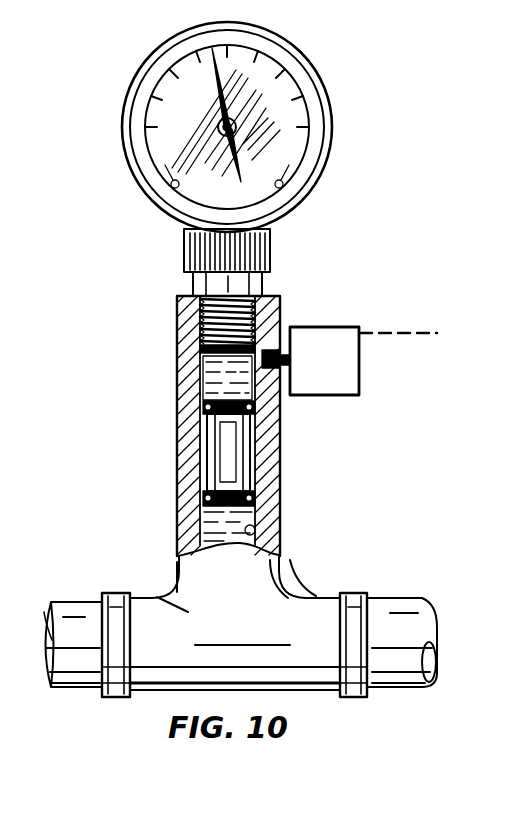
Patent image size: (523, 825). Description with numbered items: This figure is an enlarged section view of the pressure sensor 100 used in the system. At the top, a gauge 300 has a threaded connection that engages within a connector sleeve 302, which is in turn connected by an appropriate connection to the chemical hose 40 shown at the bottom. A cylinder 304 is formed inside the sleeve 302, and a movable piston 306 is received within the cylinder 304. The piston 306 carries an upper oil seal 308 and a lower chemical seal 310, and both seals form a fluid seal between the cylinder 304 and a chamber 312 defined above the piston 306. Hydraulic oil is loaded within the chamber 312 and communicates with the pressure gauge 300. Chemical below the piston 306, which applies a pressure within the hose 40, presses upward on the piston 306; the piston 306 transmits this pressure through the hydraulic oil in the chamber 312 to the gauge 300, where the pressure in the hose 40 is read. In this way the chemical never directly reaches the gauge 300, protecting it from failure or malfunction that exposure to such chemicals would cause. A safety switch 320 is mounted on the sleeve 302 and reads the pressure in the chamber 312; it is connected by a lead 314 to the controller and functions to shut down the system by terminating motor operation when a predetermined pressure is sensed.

The pressure sensor 100 is at (293, 44).
The gauge 300 is at (312, 96).
The connector sleeve 302 is at (190, 325).
The cylinder 304 is at (256, 530).
The movable piston 306 is at (240, 469).
The upper oil seal 308 is at (197, 421).
The lower chemical seal 310 is at (197, 498).
The chamber 312 is at (197, 372).
The lead 314 is at (398, 331).
The safety switch 320 is at (352, 374).
The chemical hose 40 is at (397, 600).